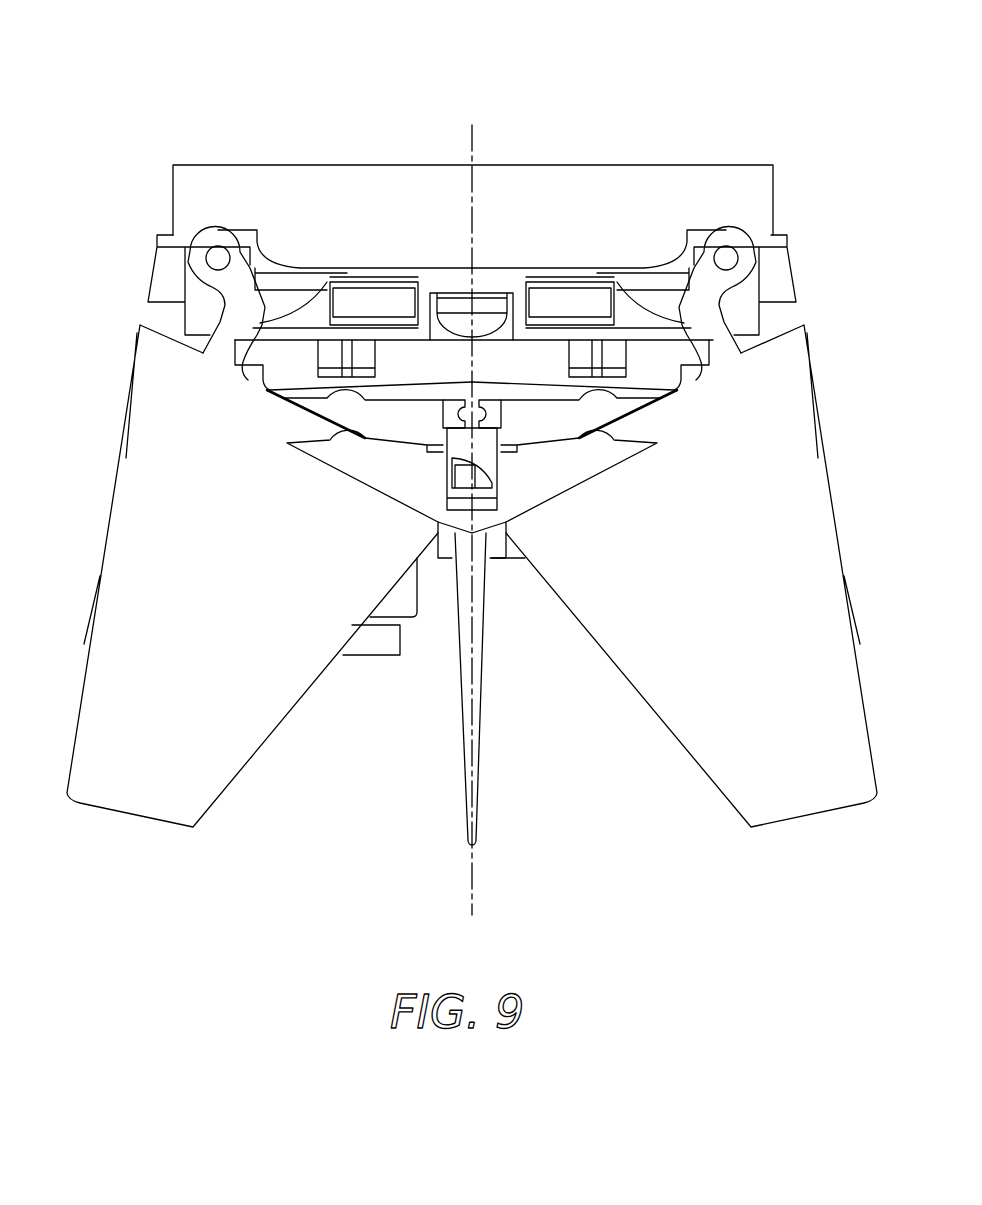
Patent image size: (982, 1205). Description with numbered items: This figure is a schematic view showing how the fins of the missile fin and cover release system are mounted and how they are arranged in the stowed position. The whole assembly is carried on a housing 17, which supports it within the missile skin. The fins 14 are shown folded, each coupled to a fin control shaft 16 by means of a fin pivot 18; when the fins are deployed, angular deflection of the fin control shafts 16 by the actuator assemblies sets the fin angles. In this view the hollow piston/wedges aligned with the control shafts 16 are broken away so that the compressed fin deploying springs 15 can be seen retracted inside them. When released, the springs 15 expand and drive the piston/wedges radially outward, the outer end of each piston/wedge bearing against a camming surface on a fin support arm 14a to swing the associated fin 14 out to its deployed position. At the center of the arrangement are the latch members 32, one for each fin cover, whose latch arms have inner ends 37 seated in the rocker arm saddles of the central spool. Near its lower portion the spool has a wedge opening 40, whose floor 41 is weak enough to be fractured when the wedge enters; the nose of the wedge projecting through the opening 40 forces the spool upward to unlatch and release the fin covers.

The fins 14 is at (217, 767).
The fin support arm 14a is at (688, 310).
The fin deploying springs 15 is at (417, 283).
The fin control shafts 16 is at (393, 275).
The housing 17 is at (516, 165).
The fin pivots 18 is at (734, 256).
The latch members 32 is at (558, 394).
The inner ends 37 is at (487, 413).
The wedge opening 40 is at (462, 492).
The floor 41 is at (458, 600).